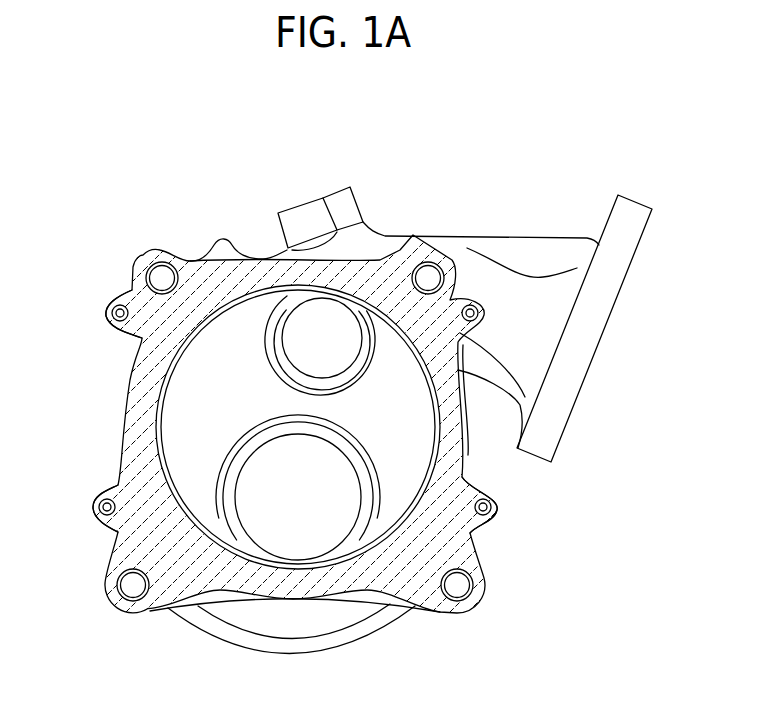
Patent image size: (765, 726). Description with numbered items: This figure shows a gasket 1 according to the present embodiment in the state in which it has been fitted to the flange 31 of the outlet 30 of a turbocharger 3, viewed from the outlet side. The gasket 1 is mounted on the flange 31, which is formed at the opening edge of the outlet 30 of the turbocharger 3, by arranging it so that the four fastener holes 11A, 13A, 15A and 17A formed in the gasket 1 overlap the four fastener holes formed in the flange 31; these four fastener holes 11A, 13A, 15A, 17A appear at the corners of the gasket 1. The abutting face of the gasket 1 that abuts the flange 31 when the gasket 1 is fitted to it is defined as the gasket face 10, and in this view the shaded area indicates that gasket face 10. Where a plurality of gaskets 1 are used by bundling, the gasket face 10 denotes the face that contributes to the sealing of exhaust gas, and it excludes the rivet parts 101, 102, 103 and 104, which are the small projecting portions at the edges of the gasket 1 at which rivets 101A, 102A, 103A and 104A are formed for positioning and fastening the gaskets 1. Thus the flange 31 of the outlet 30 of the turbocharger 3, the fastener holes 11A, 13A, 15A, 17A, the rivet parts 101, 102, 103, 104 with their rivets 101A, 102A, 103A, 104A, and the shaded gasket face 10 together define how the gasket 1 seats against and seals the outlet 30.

The gasket 1 is at (205, 208).
The turbocharger 3 is at (470, 146).
The gasket face 10 is at (468, 533).
The outlet 30 is at (380, 243).
The flange 31 is at (428, 613).
The fastener hole 11A is at (439, 263).
The fastener hole 13A is at (472, 594).
The fastener hole 15A is at (125, 599).
The fastener hole 17A is at (151, 266).
The rivet part 101 is at (467, 373).
The rivet 101A is at (477, 306).
The rivet part 102 is at (469, 497).
The rivet 102A is at (491, 507).
The rivet part 103 is at (117, 520).
The rivet 103A is at (105, 499).
The rivet part 104 is at (130, 330).
The rivet 104A is at (114, 306).